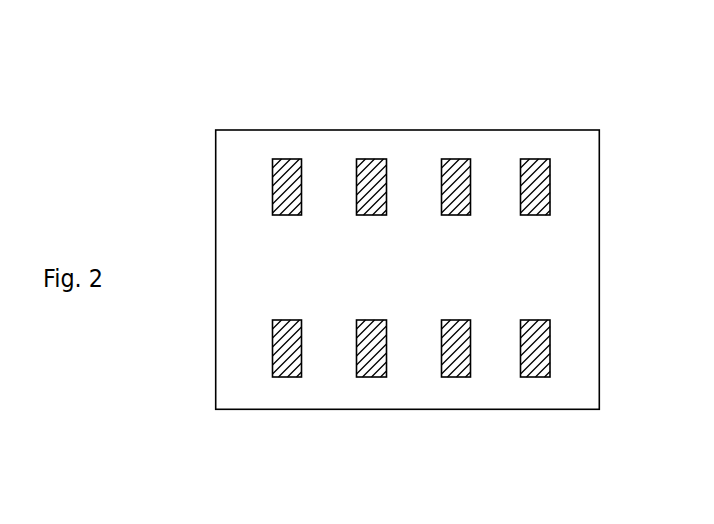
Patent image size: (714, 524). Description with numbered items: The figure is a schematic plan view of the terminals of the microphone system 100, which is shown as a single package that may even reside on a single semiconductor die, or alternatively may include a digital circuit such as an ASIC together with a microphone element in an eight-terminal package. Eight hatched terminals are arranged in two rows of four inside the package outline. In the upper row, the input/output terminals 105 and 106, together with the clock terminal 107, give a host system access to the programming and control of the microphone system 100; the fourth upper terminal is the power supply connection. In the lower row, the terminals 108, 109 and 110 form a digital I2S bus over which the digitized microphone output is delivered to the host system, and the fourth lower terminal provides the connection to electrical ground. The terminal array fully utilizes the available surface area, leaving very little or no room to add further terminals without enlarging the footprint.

The microphone system 100 is at (182, 75).
The input/output terminal 105 is at (282, 152).
The input/output terminal 106 is at (373, 152).
The clock terminal 107 is at (455, 152).
The terminal 108 is at (297, 385).
The terminal 109 is at (372, 385).
The terminal 110 is at (458, 387).